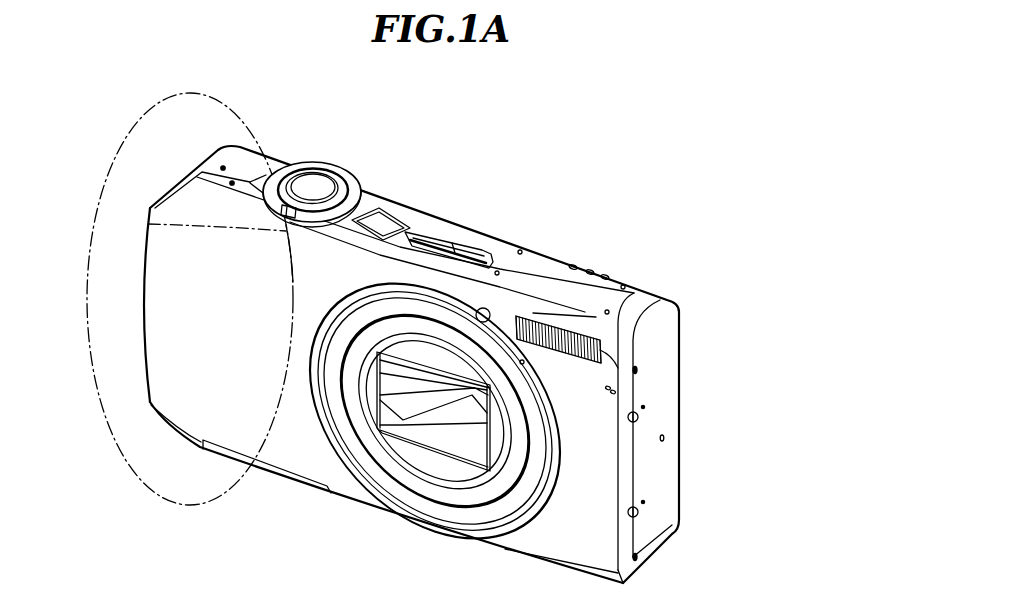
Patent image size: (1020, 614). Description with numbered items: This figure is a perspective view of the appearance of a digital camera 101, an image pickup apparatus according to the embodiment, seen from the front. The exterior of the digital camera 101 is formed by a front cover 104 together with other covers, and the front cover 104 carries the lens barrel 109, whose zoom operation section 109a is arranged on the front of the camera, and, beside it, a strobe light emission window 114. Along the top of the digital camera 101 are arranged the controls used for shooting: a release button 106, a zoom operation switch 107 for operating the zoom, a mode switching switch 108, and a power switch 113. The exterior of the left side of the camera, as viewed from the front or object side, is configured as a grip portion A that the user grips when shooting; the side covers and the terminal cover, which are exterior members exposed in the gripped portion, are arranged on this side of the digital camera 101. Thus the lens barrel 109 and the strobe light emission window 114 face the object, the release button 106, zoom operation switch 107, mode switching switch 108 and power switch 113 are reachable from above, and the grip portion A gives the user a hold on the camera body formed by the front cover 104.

The grip portion A is at (122, 152).
The digital camera 101 is at (449, 339).
The front cover 104 is at (590, 447).
The release button 106 is at (321, 180).
The zoom operation switch 107 is at (274, 178).
The mode switching switch 108 is at (437, 237).
The lens barrel 109 is at (469, 512).
The zoom operation section 109a is at (423, 448).
The power switch 113 is at (386, 217).
The strobe light emission window 114 is at (585, 335).